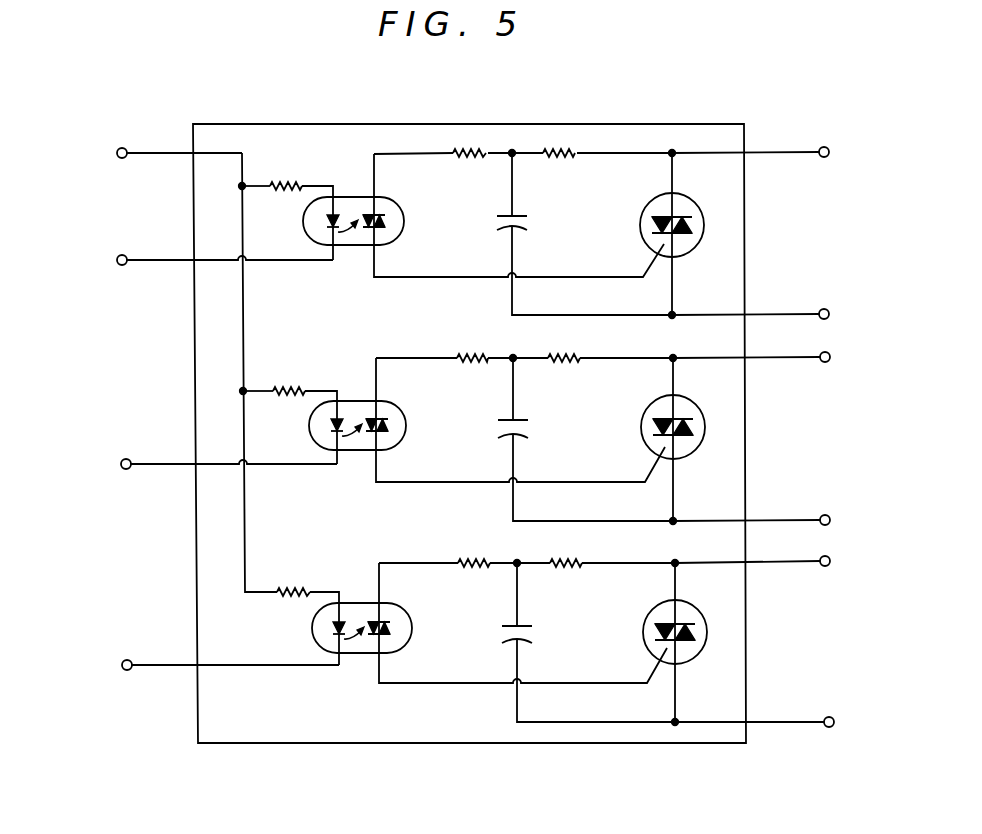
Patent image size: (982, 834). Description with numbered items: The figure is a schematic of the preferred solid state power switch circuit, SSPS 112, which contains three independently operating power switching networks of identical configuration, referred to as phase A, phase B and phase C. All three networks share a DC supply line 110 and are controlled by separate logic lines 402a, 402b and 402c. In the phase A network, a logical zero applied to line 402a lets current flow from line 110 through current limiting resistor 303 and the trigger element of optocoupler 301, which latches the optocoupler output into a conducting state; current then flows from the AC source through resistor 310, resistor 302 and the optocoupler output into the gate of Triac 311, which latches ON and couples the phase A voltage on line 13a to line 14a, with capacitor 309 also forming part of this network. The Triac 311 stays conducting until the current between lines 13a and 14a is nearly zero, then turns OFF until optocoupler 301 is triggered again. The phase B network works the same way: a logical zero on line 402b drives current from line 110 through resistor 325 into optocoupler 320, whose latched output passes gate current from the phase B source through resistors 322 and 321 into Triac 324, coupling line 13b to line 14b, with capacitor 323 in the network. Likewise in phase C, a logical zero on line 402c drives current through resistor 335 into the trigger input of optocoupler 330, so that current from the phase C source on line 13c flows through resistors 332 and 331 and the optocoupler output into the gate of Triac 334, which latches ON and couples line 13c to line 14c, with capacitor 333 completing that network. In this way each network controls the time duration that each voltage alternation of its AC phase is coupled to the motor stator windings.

The SSPS 112 is at (302, 124).
The line 110 is at (116, 150).
The line 402a is at (119, 256).
The line 402b is at (122, 459).
The line 402c is at (123, 660).
The current limiting resistor 303 is at (291, 184).
The optocoupler 301 is at (384, 197).
The resistor 302 is at (470, 160).
The resistor 310 is at (554, 160).
The capacitor 309 is at (530, 225).
The Triac 311 is at (678, 194).
The line 13a is at (828, 146).
The line 14a is at (828, 309).
The resistor 325 is at (294, 388).
The optocoupler 320 is at (388, 401).
The resistor 321 is at (472, 365).
The resistor 322 is at (559, 365).
The capacitor 323 is at (532, 431).
The Triac 324 is at (678, 397).
The line 13b is at (828, 362).
The line 14b is at (829, 515).
The resistor 335 is at (290, 590).
The optocoupler 330 is at (398, 605).
The resistor 331 is at (473, 570).
The resistor 332 is at (563, 570).
The capacitor 333 is at (536, 637).
The Triac 334 is at (680, 603).
The line 13c is at (828, 566).
The line 14c is at (833, 717).